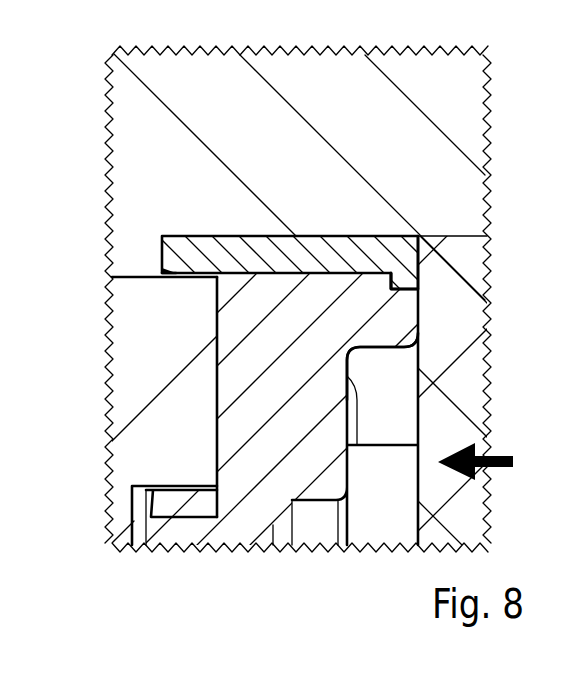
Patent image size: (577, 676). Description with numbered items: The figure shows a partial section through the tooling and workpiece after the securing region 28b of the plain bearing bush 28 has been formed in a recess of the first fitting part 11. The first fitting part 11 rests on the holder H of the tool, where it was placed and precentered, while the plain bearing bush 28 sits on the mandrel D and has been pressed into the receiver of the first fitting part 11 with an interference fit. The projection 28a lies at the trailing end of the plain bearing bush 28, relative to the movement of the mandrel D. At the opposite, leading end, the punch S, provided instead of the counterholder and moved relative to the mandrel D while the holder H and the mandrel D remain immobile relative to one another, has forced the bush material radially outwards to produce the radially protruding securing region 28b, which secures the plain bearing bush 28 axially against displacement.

The mandrel D is at (167, 168).
The plain bearing bush 28 is at (364, 228).
The projection 28a is at (190, 267).
The securing region 28b is at (418, 278).
The punch S is at (448, 330).
The first fitting part 11 is at (362, 363).
The holder H is at (137, 397).